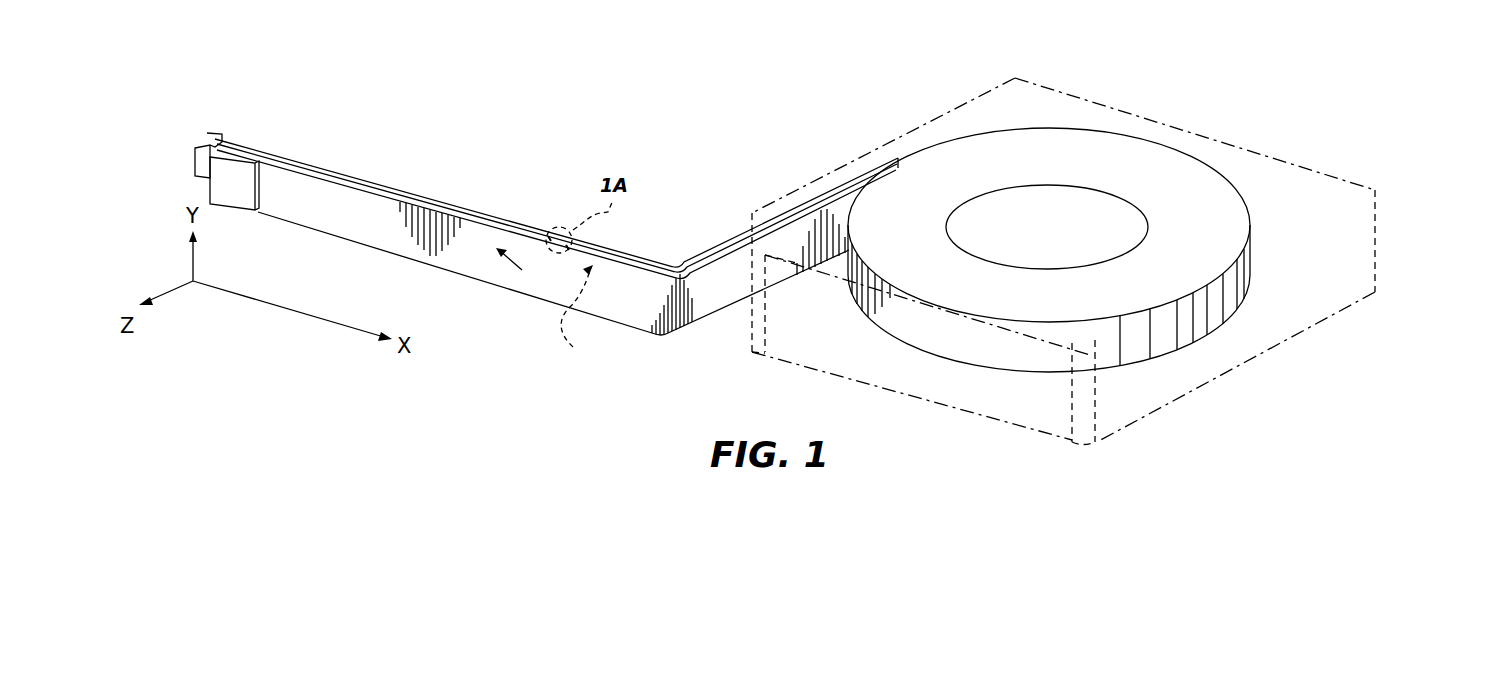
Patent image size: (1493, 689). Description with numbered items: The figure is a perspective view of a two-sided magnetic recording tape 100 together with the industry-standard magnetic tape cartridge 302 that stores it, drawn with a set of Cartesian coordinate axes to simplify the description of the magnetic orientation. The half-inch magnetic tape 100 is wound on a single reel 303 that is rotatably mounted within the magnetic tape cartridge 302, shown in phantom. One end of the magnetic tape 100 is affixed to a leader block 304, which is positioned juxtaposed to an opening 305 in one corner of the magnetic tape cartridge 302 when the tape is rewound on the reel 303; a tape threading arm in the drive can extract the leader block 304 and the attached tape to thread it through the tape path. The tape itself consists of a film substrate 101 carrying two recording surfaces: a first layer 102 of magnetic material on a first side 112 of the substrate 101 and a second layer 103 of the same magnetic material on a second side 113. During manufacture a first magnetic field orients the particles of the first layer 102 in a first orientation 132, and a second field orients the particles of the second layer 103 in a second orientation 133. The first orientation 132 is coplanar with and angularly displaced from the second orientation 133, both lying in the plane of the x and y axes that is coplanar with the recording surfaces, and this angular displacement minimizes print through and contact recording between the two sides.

The magnetic tape 100 is at (546, 234).
The film substrate 101 is at (723, 250).
The first layer 102 is at (363, 191).
The second layer 103 is at (361, 178).
The first side 112 is at (353, 230).
The second side 113 is at (393, 188).
The first orientation 132 is at (513, 260).
The second orientation 133 is at (594, 315).
The magnetic tape cartridge 302 is at (1317, 176).
The reel 303 is at (1177, 167).
The leader block 304 is at (243, 143).
The opening 305 is at (762, 308).